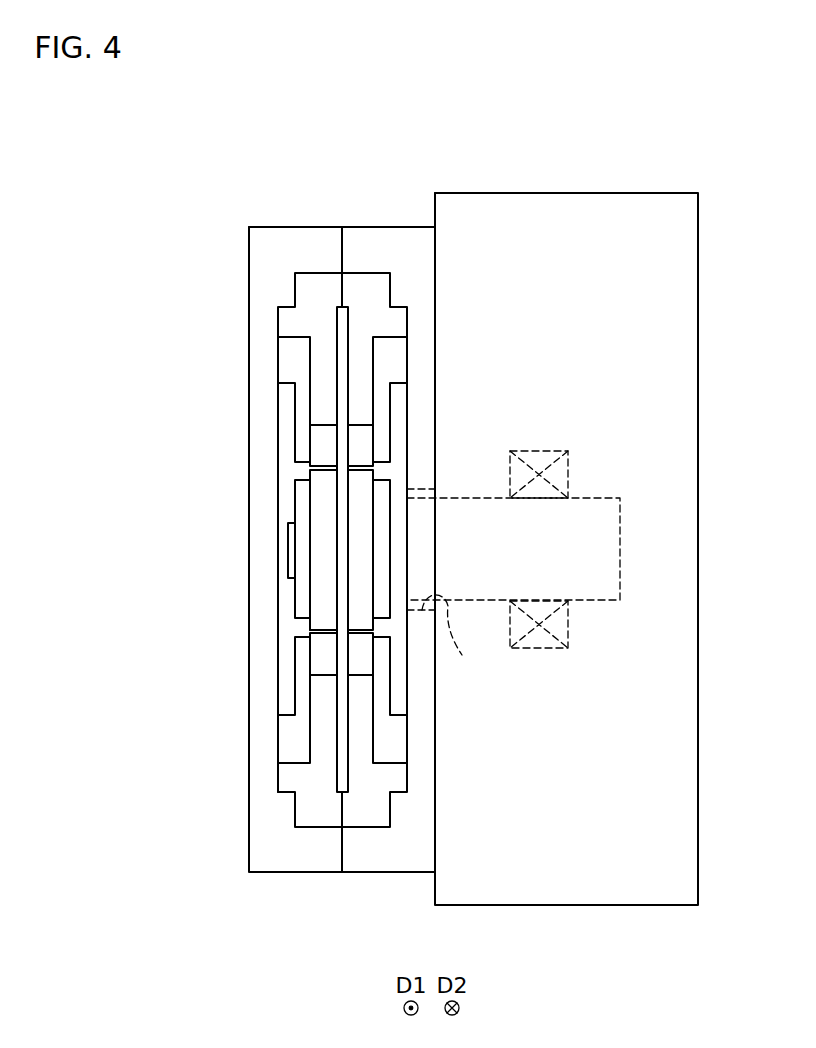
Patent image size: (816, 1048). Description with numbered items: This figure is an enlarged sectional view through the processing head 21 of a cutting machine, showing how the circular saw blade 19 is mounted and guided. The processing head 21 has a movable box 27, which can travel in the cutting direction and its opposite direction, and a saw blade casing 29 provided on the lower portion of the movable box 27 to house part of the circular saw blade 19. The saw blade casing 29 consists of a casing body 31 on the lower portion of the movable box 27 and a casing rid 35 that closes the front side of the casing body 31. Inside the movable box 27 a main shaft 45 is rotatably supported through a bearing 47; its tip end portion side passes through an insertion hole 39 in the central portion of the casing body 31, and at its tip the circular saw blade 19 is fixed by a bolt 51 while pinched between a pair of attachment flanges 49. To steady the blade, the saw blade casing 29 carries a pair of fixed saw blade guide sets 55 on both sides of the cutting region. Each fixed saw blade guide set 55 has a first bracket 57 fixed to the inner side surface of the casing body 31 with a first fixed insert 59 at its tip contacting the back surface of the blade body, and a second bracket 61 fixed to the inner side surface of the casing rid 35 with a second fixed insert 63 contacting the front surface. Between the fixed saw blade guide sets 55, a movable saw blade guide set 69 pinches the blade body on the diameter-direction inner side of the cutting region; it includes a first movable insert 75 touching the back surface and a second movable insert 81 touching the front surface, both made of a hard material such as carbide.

The circular saw blade 19 is at (337, 322).
The processing head 21 is at (463, 193).
The movable box 27 is at (532, 200).
The saw blade casing 29 is at (293, 152).
The casing body 31 is at (392, 232).
The casing rid 35 is at (292, 232).
The insertion hole 39 is at (449, 641).
The main shaft 45 is at (590, 500).
The bearing 47 is at (538, 452).
The attachment flange 49 is at (310, 494).
The bolt 51 is at (292, 540).
The fixed saw blade guide set 55 is at (277, 371).
The first bracket 57 is at (392, 354).
The first fixed insert 59 is at (366, 447).
The second bracket 61 is at (285, 350).
The second fixed insert 63 is at (322, 447).
The movable saw blade guide set 69 is at (306, 594).
The first movable insert 75 is at (372, 568).
The second movable insert 81 is at (320, 606).